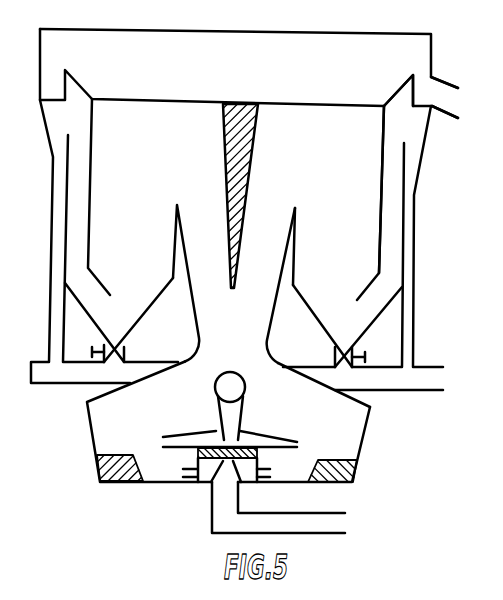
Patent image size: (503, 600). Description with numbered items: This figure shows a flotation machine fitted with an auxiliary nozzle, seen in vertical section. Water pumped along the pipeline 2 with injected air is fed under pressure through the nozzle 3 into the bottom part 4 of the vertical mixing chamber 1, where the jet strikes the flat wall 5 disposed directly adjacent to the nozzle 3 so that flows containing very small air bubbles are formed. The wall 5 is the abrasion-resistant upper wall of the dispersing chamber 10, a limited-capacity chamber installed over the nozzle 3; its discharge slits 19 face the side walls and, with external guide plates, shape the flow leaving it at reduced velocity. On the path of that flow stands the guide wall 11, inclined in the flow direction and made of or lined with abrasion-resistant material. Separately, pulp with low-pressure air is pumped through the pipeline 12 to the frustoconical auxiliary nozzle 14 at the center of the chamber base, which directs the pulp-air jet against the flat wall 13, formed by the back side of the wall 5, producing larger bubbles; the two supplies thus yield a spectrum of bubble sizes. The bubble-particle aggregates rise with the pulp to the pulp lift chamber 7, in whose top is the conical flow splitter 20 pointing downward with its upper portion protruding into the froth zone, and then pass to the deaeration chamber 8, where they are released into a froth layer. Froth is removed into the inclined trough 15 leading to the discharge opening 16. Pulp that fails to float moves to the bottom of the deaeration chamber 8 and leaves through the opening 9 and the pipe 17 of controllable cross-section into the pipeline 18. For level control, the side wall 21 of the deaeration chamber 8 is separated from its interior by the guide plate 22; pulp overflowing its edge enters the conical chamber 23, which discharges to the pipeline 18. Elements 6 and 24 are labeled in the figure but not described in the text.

The mixing chamber 1 is at (89, 449).
The pipeline 2 is at (345, 525).
The nozzle 3 is at (212, 505).
The bottom part 4 is at (358, 457).
The flat wall 5 is at (207, 470).
The burner body right portion 6 is at (368, 406).
The pulp lift chamber 7 is at (278, 306).
The deaeration chamber 8 is at (298, 242).
The opening 9 is at (114, 346).
The dispersing chamber 10 is at (262, 466).
The guide wall 11 is at (318, 483).
The pipeline 12 is at (232, 384).
The flat wall 13 is at (210, 437).
The auxiliary nozzle 14 is at (243, 431).
The trough 15 is at (450, 88).
The discharge opening 16 is at (427, 88).
The pipe 17 is at (125, 353).
The pipeline 18 is at (423, 393).
The discharge slits 19 is at (250, 478).
The conical flow splitter 20 is at (240, 172).
The side wall 21 is at (404, 218).
The guide plate 22 is at (384, 188).
The chamber 23 is at (411, 154).
The inclined baffle 24 is at (405, 345).